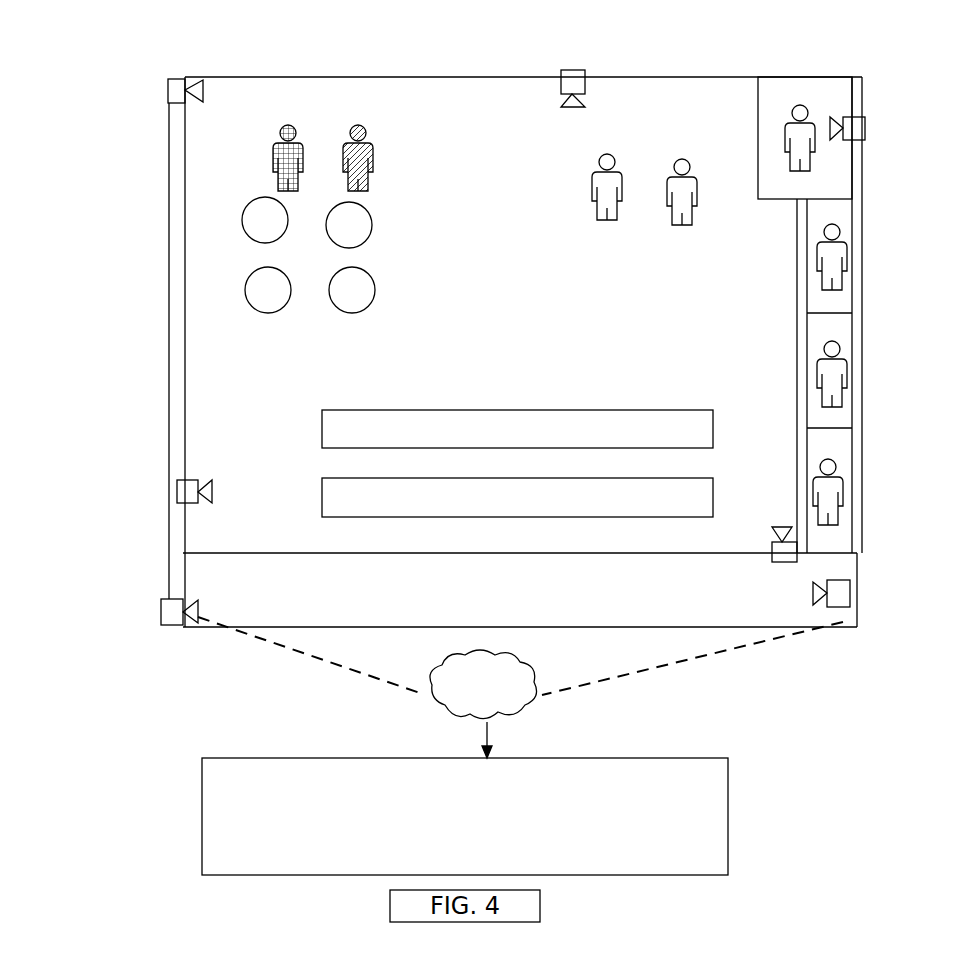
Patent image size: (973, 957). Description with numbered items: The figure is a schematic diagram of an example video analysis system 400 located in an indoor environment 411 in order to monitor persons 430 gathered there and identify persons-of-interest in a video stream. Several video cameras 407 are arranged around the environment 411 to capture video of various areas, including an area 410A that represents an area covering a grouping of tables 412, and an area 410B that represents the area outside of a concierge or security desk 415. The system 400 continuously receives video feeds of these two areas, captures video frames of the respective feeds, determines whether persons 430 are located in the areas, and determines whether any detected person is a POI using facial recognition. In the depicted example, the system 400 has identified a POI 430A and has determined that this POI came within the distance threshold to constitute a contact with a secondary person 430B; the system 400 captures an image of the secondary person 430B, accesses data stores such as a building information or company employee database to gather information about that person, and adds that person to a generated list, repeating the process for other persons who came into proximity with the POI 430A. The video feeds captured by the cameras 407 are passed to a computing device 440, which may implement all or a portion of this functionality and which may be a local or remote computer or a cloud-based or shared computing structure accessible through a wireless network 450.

The video analysis system 400 is at (192, 53).
The environment 411 is at (230, 77).
The video cameras 407 is at (168, 80).
The area 410A is at (348, 97).
The area 410B is at (683, 108).
The tables 412 is at (354, 238).
The concierge or security desk 415 is at (855, 188).
The persons 430 is at (610, 155).
The person-of-interest 430A is at (360, 126).
The secondary person 430B is at (288, 125).
The computing device 440 is at (563, 758).
The wireless network 450 is at (522, 680).